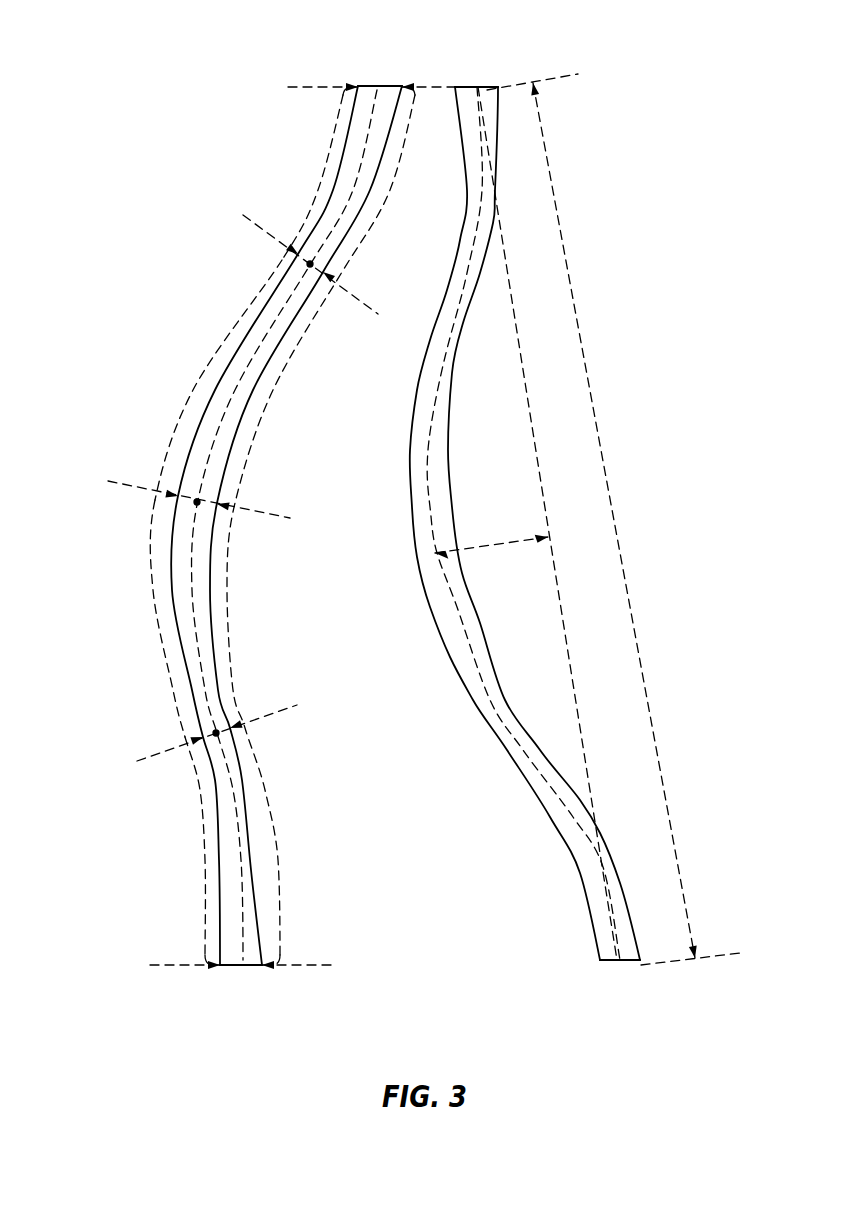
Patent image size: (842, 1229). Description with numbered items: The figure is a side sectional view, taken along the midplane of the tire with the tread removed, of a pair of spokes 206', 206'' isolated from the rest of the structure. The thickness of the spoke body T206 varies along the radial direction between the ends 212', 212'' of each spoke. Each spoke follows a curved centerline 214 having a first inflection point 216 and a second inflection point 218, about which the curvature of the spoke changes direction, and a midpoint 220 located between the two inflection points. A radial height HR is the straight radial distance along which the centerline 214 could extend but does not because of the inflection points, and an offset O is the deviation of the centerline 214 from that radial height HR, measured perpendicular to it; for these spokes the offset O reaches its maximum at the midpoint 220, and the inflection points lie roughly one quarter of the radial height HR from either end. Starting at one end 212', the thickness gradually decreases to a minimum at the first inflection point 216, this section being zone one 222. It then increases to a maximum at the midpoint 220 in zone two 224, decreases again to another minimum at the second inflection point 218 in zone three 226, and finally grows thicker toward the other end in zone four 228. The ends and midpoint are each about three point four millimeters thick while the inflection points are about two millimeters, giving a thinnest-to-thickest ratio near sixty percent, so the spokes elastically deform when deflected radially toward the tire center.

The spoke 206' is at (293, 525).
The spoke 206'' is at (492, 523).
The end of spoke 212' is at (298, 530).
The end of spoke 212'' is at (534, 530).
The centerline 214 is at (228, 402).
The first inflection point 216 is at (306, 265).
The second inflection point 218 is at (216, 737).
The midpoint 220 is at (196, 505).
The zone one 222 is at (325, 178).
The zone two 224 is at (197, 372).
The zone three 226 is at (158, 632).
The zone four 228 is at (206, 843).
The thickness of the spoke body T206 is at (160, 965).
The offset O is at (495, 547).
The radial height HR is at (615, 522).